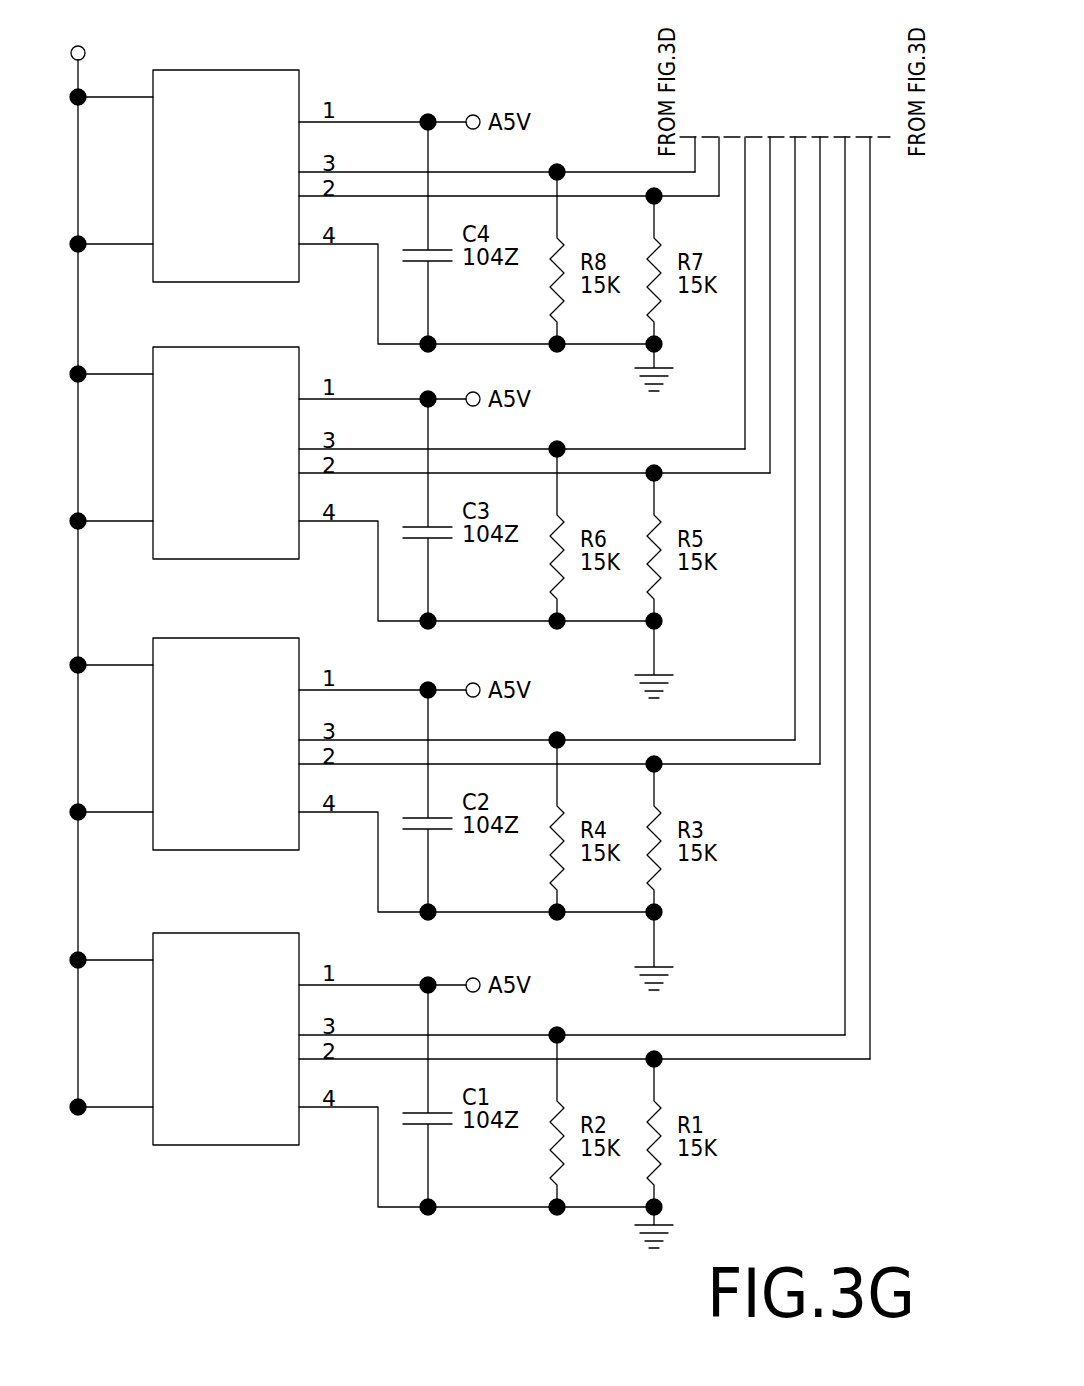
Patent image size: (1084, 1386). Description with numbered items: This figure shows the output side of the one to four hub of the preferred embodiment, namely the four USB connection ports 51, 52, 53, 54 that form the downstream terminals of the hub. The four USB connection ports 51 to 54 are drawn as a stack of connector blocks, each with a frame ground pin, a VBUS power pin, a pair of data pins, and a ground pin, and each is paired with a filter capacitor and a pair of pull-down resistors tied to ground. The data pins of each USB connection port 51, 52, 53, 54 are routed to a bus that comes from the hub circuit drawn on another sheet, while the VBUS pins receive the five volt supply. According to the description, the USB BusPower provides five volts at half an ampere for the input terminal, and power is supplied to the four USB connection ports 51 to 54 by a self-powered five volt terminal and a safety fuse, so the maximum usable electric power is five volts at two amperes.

The USB connection port 51 is at (257, 1133).
The USB connection port 52 is at (270, 838).
The USB connection port 53 is at (273, 548).
The USB connection port 54 is at (261, 270).